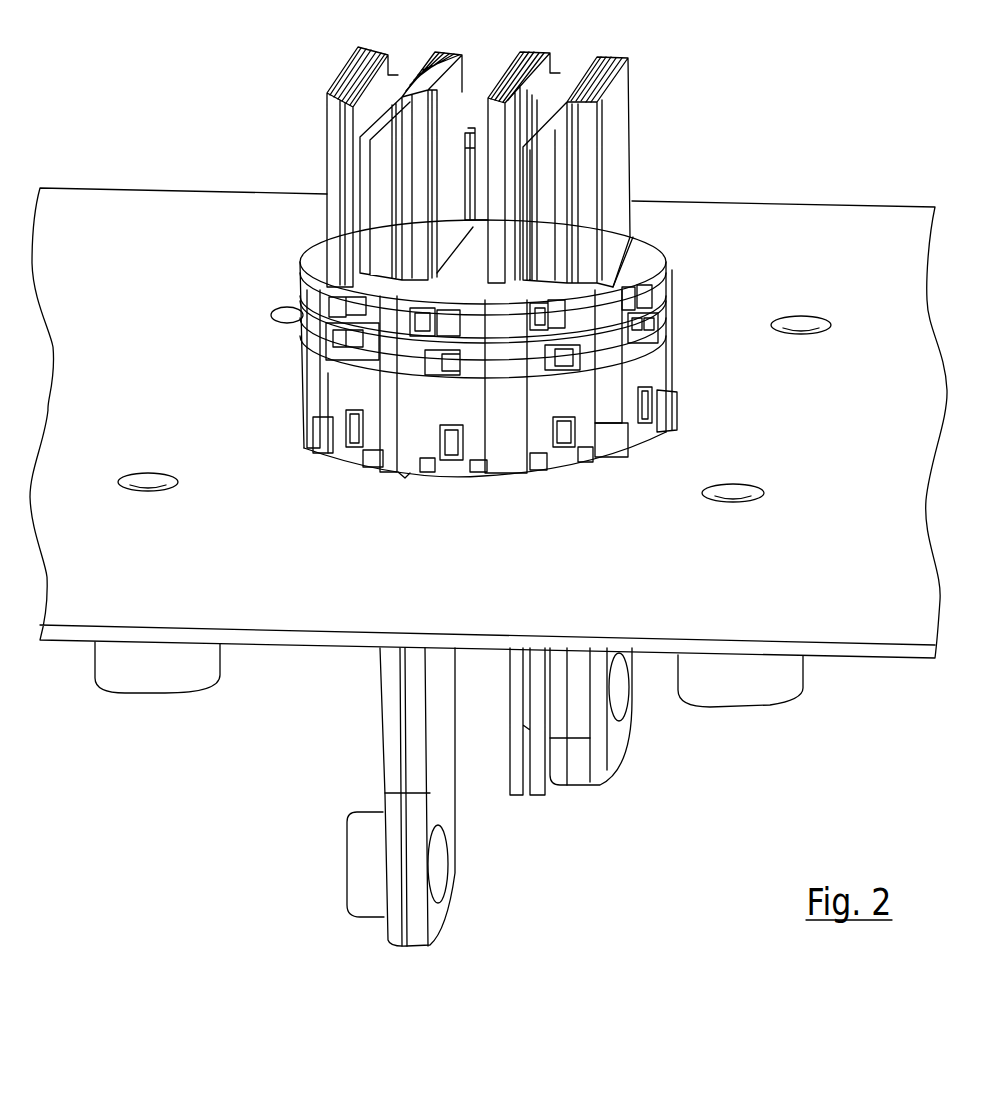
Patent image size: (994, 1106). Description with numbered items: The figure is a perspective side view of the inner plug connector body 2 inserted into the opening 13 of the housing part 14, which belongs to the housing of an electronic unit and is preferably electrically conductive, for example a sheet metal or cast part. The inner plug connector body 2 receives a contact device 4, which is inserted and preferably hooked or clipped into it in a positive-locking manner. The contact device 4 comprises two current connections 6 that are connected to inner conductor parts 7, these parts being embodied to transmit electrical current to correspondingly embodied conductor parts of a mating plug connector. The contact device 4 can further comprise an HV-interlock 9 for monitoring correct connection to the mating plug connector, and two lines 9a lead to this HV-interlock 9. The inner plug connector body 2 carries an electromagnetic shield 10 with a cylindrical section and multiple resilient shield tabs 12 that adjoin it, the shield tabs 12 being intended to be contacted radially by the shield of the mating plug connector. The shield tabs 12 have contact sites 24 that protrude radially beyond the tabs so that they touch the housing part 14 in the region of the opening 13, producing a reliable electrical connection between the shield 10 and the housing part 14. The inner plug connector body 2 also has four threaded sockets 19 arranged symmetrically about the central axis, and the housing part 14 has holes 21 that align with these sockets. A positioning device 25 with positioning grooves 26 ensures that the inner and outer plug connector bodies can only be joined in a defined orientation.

The inner plug connector body 2 is at (458, 798).
The contact device 4 is at (496, 155).
The current connections 6 is at (447, 905).
The inner conductor parts 7 is at (327, 122).
The HV-interlock 9 is at (473, 120).
The lines 9a is at (523, 797).
The electromagnetic shield 10 is at (512, 380).
The shield tabs 12 is at (340, 387).
The opening 13 is at (676, 436).
The housing part 14 is at (224, 561).
The threaded sockets 19 is at (172, 680).
The holes 21 is at (288, 308).
The contact sites 24 is at (428, 475).
The positioning device 25 is at (392, 476).
The positioning grooves 26 is at (402, 478).